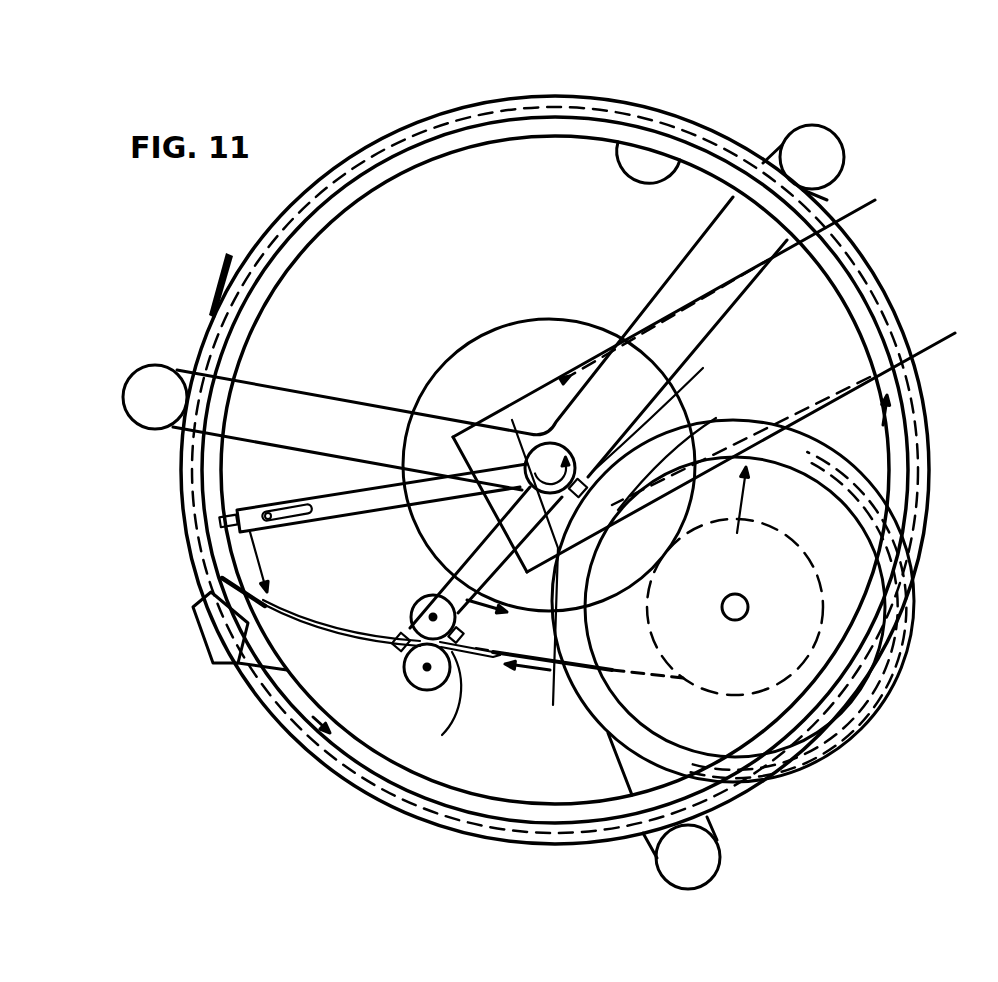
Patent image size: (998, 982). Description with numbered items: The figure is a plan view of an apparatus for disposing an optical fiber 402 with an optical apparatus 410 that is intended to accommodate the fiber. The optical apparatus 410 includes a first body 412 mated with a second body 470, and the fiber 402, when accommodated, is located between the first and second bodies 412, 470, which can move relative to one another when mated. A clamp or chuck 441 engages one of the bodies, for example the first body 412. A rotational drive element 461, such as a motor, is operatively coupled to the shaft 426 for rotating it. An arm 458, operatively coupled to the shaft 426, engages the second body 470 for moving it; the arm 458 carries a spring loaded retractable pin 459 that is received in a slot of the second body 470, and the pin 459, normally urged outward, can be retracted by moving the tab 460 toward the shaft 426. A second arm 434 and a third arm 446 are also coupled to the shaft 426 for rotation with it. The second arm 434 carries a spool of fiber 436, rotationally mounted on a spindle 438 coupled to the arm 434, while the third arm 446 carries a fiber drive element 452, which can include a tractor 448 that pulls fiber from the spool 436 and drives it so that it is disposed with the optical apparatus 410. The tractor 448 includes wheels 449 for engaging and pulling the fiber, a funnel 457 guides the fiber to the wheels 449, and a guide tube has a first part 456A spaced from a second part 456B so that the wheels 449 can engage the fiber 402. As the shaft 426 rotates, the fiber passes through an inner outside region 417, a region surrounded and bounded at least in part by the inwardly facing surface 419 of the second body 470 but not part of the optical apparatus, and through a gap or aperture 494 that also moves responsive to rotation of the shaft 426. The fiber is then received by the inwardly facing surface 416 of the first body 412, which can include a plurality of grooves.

The optical fiber 402 is at (553, 672).
The optical apparatus 410 is at (350, 795).
The first body 412 is at (330, 763).
The inwardly facing surface 416 is at (212, 592).
The inner outside region 417 is at (511, 203).
The inwardly facing surface 419 is at (670, 177).
The shaft 426 is at (535, 463).
The second arm 434 is at (590, 476).
The spool of fiber 436 is at (763, 740).
The spindle 438 is at (748, 603).
The clamp or chuck 441 is at (148, 364).
The third arm 446 is at (478, 567).
The tractor 448 is at (412, 626).
The wheels 449 is at (430, 703).
The fiber drive element 452 is at (408, 653).
The first part of guide tube 456A is at (478, 643).
The second part of guide tube 456B is at (293, 623).
The funnel 457 is at (481, 660).
The arm 458 is at (340, 500).
The spring loaded retractable pin 459 is at (228, 522).
The tab 460 is at (285, 522).
The rotational drive element 461 is at (564, 378).
The second body 470 is at (330, 752).
The gap or aperture 494 is at (225, 631).